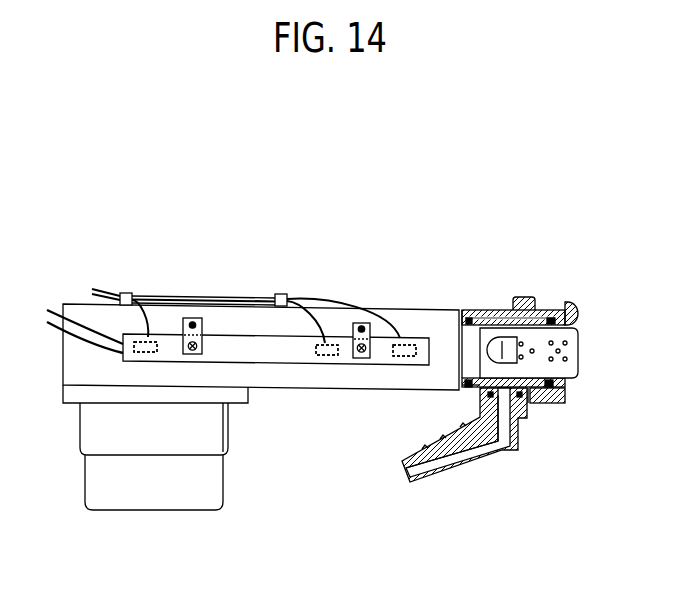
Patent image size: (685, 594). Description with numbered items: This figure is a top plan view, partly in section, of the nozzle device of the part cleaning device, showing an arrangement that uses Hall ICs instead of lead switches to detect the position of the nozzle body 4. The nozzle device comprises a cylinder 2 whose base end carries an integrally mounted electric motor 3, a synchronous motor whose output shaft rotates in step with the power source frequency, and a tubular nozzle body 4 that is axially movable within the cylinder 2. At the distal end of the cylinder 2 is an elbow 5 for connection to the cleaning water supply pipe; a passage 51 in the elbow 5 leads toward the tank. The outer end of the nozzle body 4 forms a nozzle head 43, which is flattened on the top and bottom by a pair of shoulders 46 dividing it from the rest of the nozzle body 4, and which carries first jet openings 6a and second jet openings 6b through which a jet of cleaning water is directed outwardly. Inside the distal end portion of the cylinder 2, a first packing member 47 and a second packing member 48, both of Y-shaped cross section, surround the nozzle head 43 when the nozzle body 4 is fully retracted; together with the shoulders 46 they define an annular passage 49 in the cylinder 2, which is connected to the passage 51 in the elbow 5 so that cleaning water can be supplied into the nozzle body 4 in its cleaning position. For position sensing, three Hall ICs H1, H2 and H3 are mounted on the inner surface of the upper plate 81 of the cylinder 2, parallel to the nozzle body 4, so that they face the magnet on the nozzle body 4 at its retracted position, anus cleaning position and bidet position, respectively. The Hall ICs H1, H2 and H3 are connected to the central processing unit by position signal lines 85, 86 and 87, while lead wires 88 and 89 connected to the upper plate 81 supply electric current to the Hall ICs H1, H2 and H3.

The cylinder 2 is at (253, 318).
The electric motor 3 is at (182, 493).
The nozzle body 4 is at (470, 340).
The elbow 5 is at (503, 455).
The first jet openings 6a is at (533, 350).
The second jet openings 6b is at (567, 350).
The nozzle head 43 is at (586, 385).
The shoulders 46 is at (502, 345).
The first packing member 47 is at (462, 395).
The second packing member 48 is at (552, 403).
The annular passage 49 is at (533, 397).
The passage 51 is at (495, 417).
The upper plate 81 is at (263, 353).
The position signal line 85 is at (148, 337).
The position signal line 86 is at (312, 315).
The position signal line 87 is at (372, 312).
The lead wire 88 is at (75, 333).
The lead wire 89 is at (52, 327).
The first Hall IC H1 is at (153, 340).
The second Hall IC H2 is at (323, 357).
The third Hall IC H3 is at (410, 340).